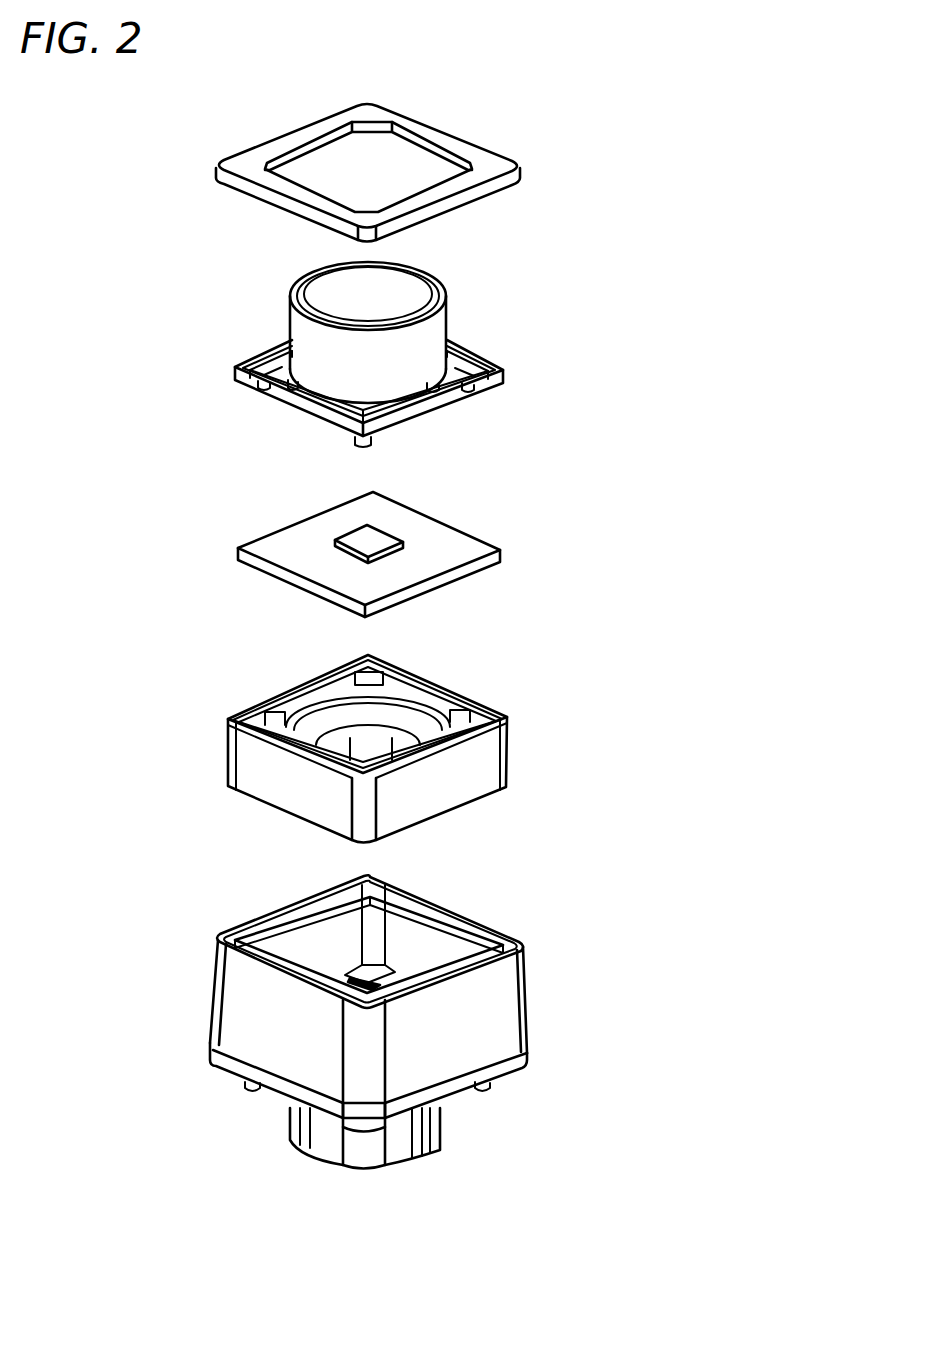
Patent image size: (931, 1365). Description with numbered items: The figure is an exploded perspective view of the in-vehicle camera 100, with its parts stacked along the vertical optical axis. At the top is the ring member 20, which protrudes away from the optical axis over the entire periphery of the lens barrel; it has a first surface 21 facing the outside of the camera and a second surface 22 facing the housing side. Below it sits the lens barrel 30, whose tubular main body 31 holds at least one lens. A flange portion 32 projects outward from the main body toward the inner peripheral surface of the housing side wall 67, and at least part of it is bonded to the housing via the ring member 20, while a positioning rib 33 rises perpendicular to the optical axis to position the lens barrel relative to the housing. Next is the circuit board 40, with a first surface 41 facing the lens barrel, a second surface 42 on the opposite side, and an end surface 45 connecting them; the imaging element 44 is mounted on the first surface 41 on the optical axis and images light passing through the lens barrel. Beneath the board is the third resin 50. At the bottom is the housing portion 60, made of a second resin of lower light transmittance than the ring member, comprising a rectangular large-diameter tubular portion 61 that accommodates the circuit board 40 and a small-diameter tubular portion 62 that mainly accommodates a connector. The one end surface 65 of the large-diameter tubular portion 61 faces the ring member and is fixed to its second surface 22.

The in-vehicle camera 100 is at (727, 240).
The ring member 20 is at (374, 162).
The first surface 21 is at (244, 153).
The second surface 22 is at (254, 196).
The lens barrel 30 is at (374, 356).
The main body 31 is at (450, 318).
The flange portion 32 is at (237, 380).
The positioning rib 33 is at (293, 413).
The circuit board 40 is at (380, 549).
The first surface 41 is at (418, 520).
The second surface 42 is at (458, 581).
The imaging element 44 is at (330, 535).
The end surface 45 is at (262, 575).
The third resin 50 is at (518, 739).
The housing portion 60 is at (405, 1013).
The large-diameter tubular portion 61 is at (538, 993).
The small-diameter tubular portion 62 is at (443, 1133).
The one end surface 65 is at (478, 910).
The housing side wall 67 is at (212, 975).